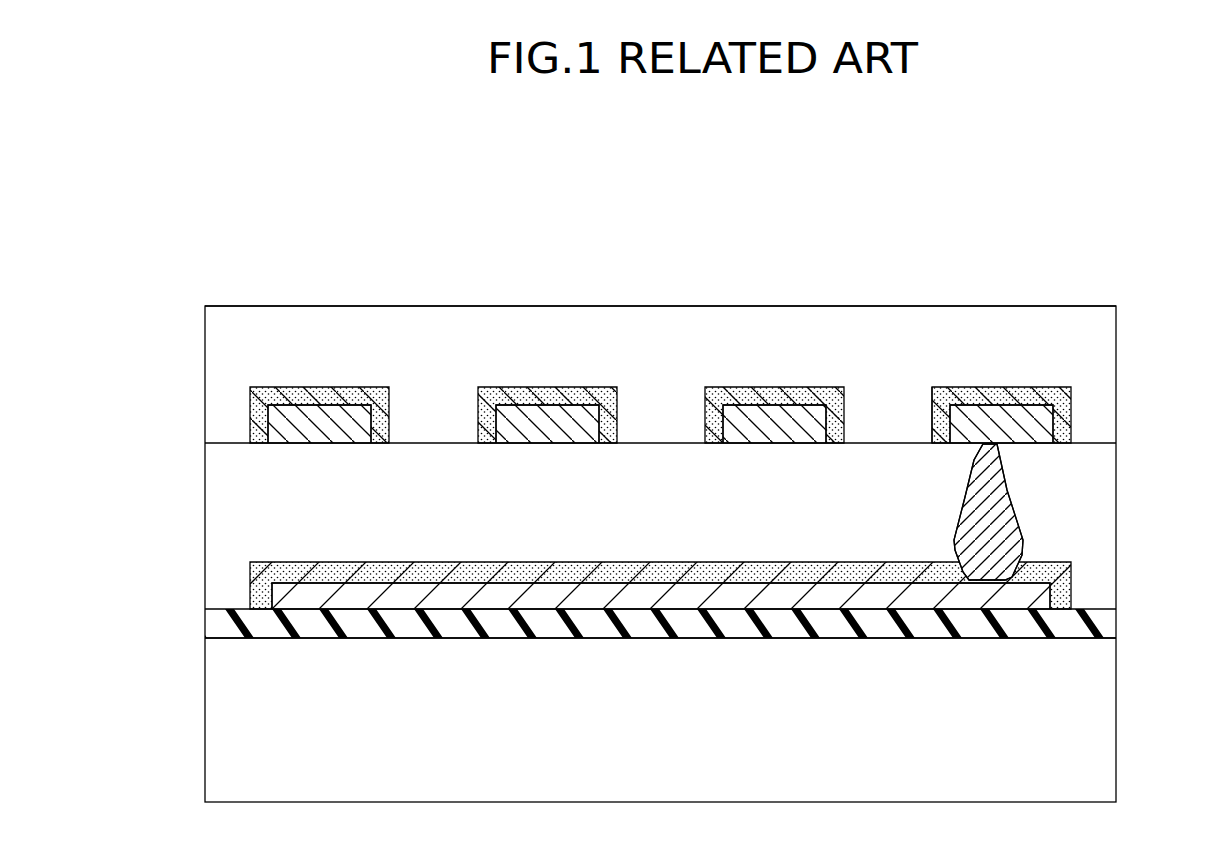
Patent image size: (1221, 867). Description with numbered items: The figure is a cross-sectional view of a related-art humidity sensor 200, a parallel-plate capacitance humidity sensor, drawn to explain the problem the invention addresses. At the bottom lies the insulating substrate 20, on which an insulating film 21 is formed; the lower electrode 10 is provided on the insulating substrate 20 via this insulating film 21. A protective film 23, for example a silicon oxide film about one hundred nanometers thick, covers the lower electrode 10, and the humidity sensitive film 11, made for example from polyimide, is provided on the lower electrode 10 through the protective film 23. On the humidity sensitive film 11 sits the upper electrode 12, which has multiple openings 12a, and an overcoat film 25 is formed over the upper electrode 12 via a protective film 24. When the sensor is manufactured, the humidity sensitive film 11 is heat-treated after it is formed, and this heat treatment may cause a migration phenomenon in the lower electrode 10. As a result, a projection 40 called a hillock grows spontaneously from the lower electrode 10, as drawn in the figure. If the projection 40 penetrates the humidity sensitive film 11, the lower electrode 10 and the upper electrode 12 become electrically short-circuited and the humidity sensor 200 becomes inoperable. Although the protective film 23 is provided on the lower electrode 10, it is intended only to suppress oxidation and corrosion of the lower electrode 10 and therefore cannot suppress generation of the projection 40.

The humidity sensor 200 is at (252, 265).
The overcoat film 25 is at (1098, 333).
The protective film 24 is at (1065, 397).
The upper electrode 12 is at (1047, 425).
The openings 12a is at (932, 416).
The humidity sensitive film 11 is at (1098, 467).
The projection 40 is at (1006, 505).
The protective film 23 is at (1061, 570).
The lower electrode 10 is at (1040, 599).
The insulating film 21 is at (1100, 622).
The insulating substrate 20 is at (1098, 718).